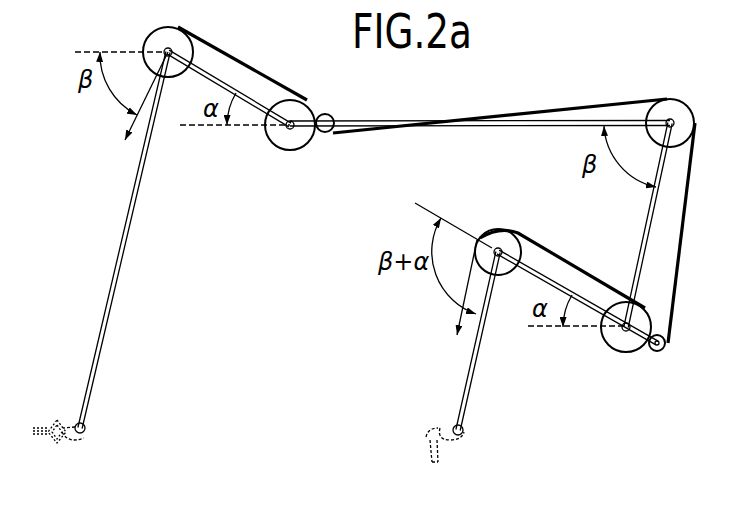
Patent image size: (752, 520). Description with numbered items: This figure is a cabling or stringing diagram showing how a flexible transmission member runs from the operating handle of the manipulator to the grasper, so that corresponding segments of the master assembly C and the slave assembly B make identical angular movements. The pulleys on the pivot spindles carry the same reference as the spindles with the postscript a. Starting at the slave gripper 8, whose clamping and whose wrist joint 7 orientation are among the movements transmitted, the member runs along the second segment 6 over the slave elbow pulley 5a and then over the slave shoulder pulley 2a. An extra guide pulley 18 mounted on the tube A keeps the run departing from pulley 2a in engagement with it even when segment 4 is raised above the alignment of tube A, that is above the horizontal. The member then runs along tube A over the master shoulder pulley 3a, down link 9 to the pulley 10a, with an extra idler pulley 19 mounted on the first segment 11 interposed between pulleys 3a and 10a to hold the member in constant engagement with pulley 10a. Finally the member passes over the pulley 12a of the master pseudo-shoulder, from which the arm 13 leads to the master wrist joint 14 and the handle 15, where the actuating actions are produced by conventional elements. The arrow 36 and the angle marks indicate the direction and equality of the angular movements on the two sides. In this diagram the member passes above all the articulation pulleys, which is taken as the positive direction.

The slave shoulder pulley 2a is at (290, 149).
The master shoulder pulley 3a is at (666, 107).
The segment 4 is at (200, 73).
The slave elbow pulley 5a is at (184, 26).
The second segment 6 is at (131, 232).
The wrist joint 7 is at (86, 432).
The gripper 8 is at (50, 412).
The link rod C 9 is at (639, 280).
The slave elbow pulley 10a is at (612, 337).
The first segment 11 is at (546, 262).
The pulley of the master pseudo-shoulder 12a is at (496, 237).
The lever arm 13 is at (473, 382).
The wrist joint 14 is at (463, 433).
The handle 15 is at (428, 426).
The extra guide pulley 18 is at (330, 114).
The extra idler pulley 19 is at (656, 352).
The direction of rotation arrow 36 is at (140, 115).
The tube A is at (447, 108).
The slave assembly B is at (266, 44).
The master assembly C is at (627, 237).